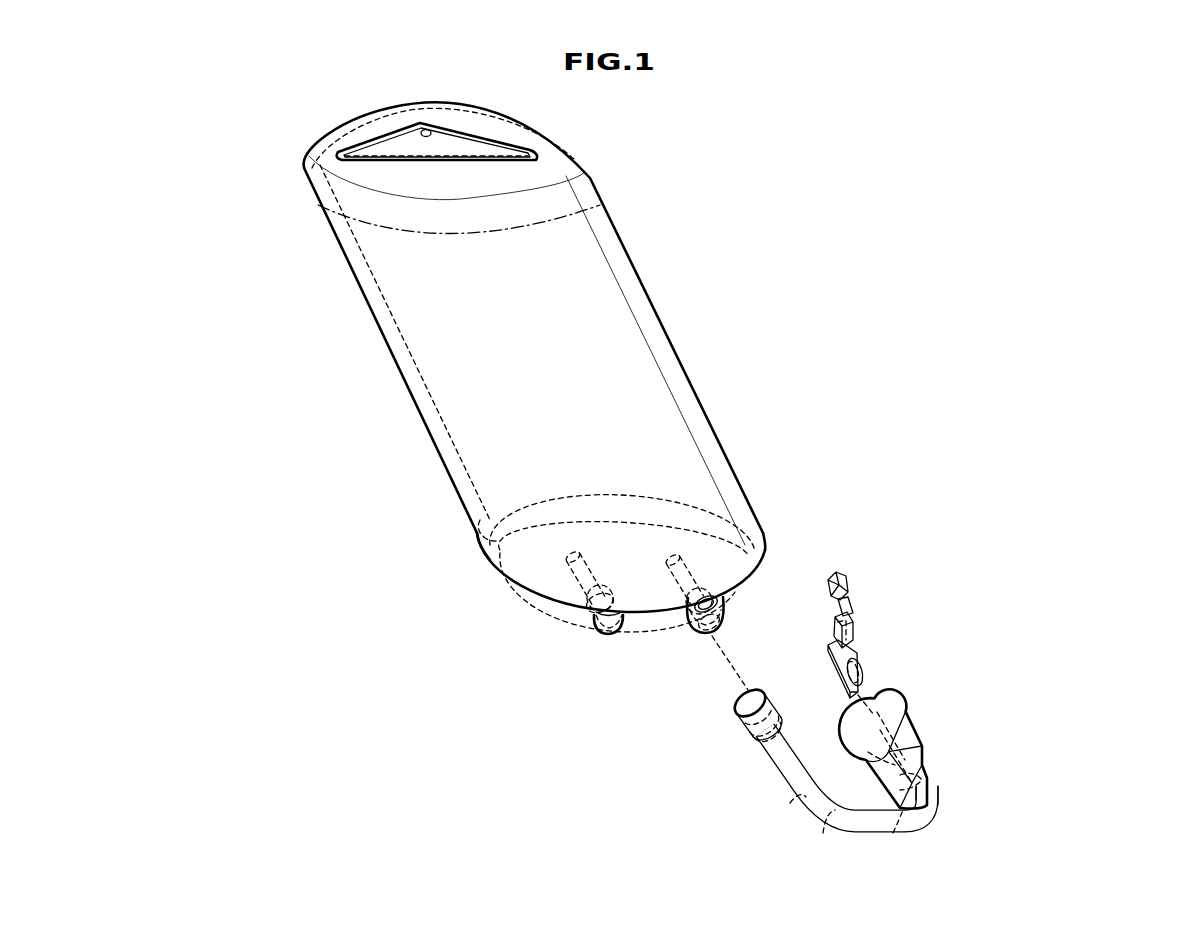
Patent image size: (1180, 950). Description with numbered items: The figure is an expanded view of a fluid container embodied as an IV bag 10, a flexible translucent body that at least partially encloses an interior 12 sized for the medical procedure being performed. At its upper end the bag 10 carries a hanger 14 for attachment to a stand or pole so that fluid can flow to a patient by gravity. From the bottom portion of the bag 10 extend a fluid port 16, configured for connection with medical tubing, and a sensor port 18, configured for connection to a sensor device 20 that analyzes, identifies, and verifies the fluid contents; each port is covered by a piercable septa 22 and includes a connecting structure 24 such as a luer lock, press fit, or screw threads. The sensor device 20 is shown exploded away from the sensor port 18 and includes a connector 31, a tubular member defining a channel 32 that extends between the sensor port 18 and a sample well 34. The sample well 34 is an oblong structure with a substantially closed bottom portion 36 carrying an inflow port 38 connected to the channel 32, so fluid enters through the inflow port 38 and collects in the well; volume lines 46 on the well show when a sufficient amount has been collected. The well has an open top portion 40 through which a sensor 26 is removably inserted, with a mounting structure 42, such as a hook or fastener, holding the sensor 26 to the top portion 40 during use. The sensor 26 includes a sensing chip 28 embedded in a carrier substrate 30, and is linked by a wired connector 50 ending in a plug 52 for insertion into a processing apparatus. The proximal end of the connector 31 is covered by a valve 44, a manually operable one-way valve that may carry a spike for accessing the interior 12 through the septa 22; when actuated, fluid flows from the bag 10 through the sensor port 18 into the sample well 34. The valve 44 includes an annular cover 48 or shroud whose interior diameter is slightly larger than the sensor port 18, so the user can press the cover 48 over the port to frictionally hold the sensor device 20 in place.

The IV bag 10 is at (283, 142).
The interior volume 12 is at (536, 360).
The hanger 14 is at (545, 158).
The fluid port 16 is at (608, 636).
The sensor port 18 is at (722, 601).
The sensor device 20 is at (1105, 565).
The piercable septa 22 is at (599, 590).
The connecting structure 24 is at (597, 630).
The sensor 26 is at (890, 650).
The sensing chip 28 is at (862, 677).
The carrier substrate 30 is at (845, 665).
The connector 31 is at (815, 838).
The channel 32 is at (868, 834).
The sample well 34 is at (865, 767).
The bottom portion 36 is at (913, 802).
The inflow port 38 is at (910, 780).
The open top portion 40 is at (900, 697).
The mounting structure 42 is at (848, 638).
The valve 44 is at (757, 749).
The volume lines 46 is at (927, 753).
The annular cover 48 is at (745, 735).
The wired connector 50 is at (855, 613).
The plug 52 is at (850, 580).